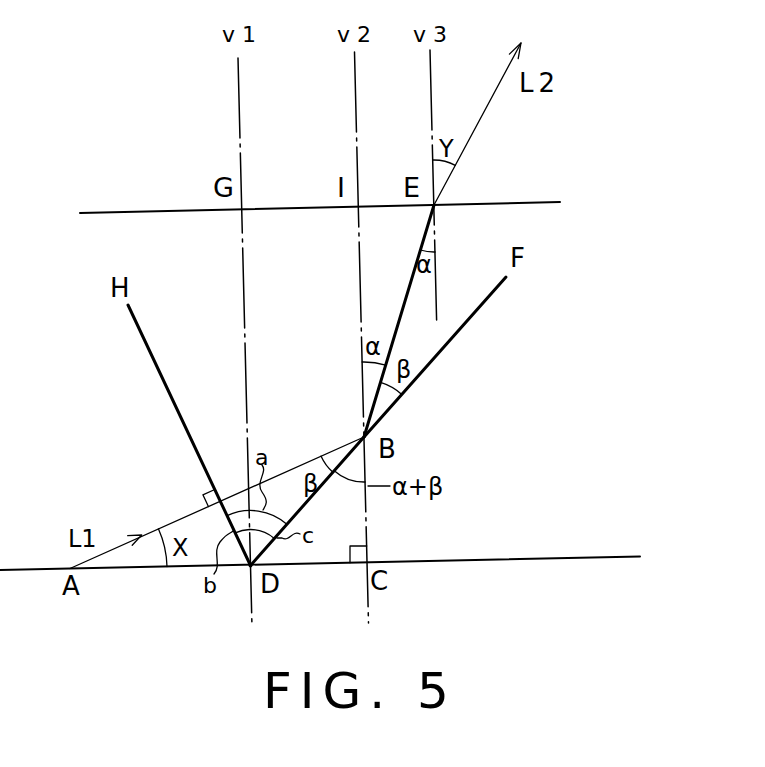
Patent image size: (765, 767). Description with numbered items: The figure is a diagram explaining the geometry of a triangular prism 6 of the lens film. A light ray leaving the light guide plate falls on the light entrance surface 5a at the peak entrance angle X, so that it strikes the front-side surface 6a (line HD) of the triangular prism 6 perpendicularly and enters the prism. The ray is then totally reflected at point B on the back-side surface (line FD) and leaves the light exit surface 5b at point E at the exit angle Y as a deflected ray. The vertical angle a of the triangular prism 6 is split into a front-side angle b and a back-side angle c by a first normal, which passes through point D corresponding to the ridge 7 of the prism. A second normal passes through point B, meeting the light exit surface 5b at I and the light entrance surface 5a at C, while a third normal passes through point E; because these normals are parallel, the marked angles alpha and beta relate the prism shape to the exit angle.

The light entrance surface 5a is at (600, 556).
The light exit surface 5b is at (540, 203).
The triangular prism 6 is at (153, 312).
The front-side surface 6a is at (150, 364).
The ridge 7 is at (247, 573).